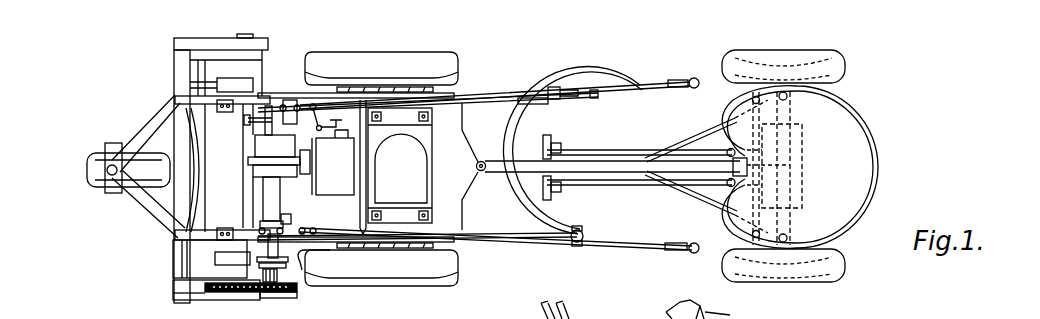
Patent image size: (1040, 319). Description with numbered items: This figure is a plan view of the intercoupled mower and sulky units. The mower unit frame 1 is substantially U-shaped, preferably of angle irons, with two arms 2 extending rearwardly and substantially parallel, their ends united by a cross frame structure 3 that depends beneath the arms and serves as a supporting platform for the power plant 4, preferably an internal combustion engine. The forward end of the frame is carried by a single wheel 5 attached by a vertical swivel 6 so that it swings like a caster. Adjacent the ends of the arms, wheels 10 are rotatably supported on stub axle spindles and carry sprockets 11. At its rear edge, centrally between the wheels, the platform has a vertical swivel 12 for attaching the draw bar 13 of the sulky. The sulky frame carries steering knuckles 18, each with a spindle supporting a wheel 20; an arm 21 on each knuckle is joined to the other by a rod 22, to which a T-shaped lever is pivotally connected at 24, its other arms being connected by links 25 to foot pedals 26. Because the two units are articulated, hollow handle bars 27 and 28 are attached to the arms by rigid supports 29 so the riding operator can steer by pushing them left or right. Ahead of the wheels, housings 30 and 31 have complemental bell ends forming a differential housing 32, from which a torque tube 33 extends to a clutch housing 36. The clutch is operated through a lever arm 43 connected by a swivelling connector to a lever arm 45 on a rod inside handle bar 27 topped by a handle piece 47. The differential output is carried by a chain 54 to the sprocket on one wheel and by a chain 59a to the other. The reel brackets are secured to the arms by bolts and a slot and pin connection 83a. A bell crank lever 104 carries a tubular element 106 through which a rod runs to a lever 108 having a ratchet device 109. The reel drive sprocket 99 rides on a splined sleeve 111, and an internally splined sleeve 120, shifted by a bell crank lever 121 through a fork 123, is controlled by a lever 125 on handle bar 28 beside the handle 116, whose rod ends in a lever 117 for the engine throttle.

The mower unit frame 1 is at (150, 210).
The arms 2 is at (202, 240).
The cross frame structure 3 is at (455, 122).
The power plant 4 is at (400, 165).
The wheel 5 is at (163, 162).
The vertical swivel 6 is at (107, 148).
The wheels 10 is at (375, 300).
The sprockets 11 is at (425, 247).
The vertical swivel 12 is at (484, 161).
The draw bar 13 is at (507, 173).
The steering knuckles 18 is at (822, 239).
The wheel 20 is at (780, 296).
The arm 21 is at (787, 236).
The rod 22 is at (718, 213).
The pivotal connection 24 is at (803, 166).
The links 25 is at (626, 185).
The foot pedals 26 is at (556, 194).
The handle bar 27 is at (642, 82).
The handle bar 28 is at (643, 249).
The rigid supports 29 is at (485, 227).
The housing 30 is at (266, 133).
The housing 31 is at (268, 197).
The differential housing 32 is at (256, 166).
The torque tube 33 is at (304, 172).
The clutch housing 36 is at (333, 162).
The lever arm 43 is at (338, 120).
The lever arm 45 is at (315, 118).
The handle piece 47 is at (694, 78).
The chain 54 is at (284, 93).
The chain 59a is at (311, 262).
The slot and pin connection 83a is at (232, 230).
The sprocket 99 is at (231, 292).
The bell crank lever 104 is at (252, 119).
The tubular element 106 is at (289, 124).
The lever 108 is at (557, 87).
The ratchet device 109 is at (532, 104).
The sleeve 111 is at (278, 298).
The handle 116 is at (692, 254).
The lever 117 is at (316, 227).
The splined sleeve 120 is at (288, 274).
The bell crank lever 121 is at (292, 208).
The fork 123 is at (258, 265).
The lever 125 is at (573, 244).